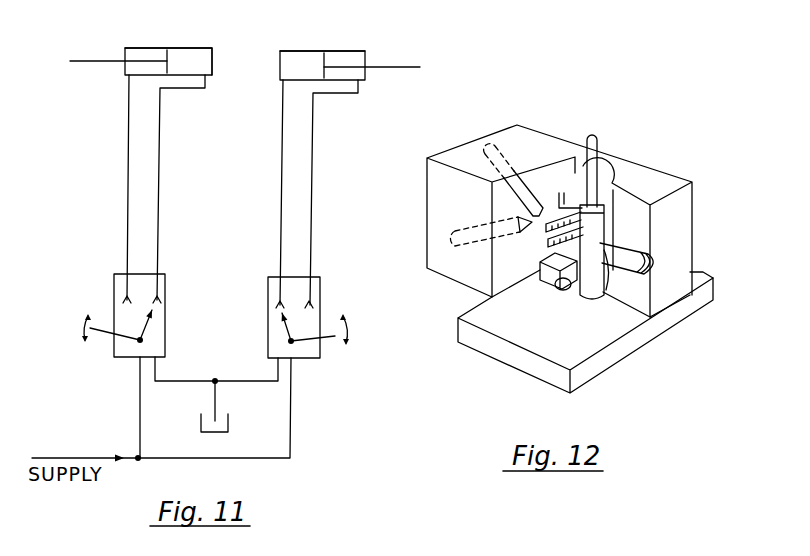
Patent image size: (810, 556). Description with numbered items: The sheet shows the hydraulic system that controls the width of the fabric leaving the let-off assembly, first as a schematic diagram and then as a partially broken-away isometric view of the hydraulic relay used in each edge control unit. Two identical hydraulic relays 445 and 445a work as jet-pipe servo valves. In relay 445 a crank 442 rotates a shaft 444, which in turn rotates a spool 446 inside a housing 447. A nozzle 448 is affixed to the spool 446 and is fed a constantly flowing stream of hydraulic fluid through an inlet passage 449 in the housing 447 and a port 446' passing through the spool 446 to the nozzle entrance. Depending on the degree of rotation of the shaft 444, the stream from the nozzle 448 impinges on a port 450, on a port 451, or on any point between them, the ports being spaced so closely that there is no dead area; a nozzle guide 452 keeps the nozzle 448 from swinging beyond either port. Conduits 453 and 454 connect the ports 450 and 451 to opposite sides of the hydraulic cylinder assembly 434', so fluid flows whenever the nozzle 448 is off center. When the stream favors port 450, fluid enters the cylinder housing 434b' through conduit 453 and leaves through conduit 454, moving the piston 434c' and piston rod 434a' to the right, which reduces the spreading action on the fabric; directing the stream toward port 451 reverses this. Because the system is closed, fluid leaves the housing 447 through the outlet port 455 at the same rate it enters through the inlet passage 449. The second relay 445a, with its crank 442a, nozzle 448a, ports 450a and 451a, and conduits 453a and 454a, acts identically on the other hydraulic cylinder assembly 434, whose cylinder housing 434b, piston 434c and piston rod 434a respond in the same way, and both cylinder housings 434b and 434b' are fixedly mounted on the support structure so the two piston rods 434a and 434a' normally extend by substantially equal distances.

In FIG. 11, the hydraulic cylinder assembly 434 is at (171, 43).
In FIG. 11, the piston rod 434a is at (108, 48).
In FIG. 11, the cylinder housing 434b is at (190, 52).
In FIG. 11, the piston 434c is at (143, 46).
In FIG. 11, the hydraulic cylinder assembly 434' is at (326, 48).
In FIG. 11, the piston rod 434a' is at (379, 54).
In FIG. 11, the cylinder housing 434b' is at (322, 31).
In FIG. 11, the piston 434c' is at (349, 87).
In FIG. 11, the crank 442 is at (336, 338).
In FIG. 11, the crank 442a is at (102, 334).
In FIG. 12, the shaft 444 is at (600, 142).
In FIG. 11, the hydraulic relay 445 is at (319, 368).
In FIG. 12, the hydraulic relay 445 is at (652, 358).
In FIG. 11, the hydraulic relay 445a is at (121, 367).
In FIG. 12, the spool 446 is at (567, 276).
In FIG. 12, the port 446' is at (598, 295).
In FIG. 12, the housing 447 is at (648, 174).
In FIG. 11, the nozzle 448 is at (287, 316).
In FIG. 12, the nozzle 448 is at (542, 262).
In FIG. 11, the nozzle 448a is at (153, 318).
In FIG. 12, the inlet passage 449 is at (672, 237).
In FIG. 11, the port 450 is at (277, 307).
In FIG. 12, the port 450 is at (528, 220).
In FIG. 11, the port 450a is at (158, 302).
In FIG. 11, the port 451 is at (317, 303).
In FIG. 12, the port 451 is at (533, 206).
In FIG. 11, the port 451a is at (122, 300).
In FIG. 12, the nozzle guide 452 is at (548, 166).
In FIG. 11, the conduit 453 is at (282, 198).
In FIG. 11, the conduit 453a is at (160, 157).
In FIG. 11, the conduit 454 is at (312, 186).
In FIG. 11, the conduit 454a is at (127, 203).
In FIG. 12, the outlet port 455 is at (558, 292).